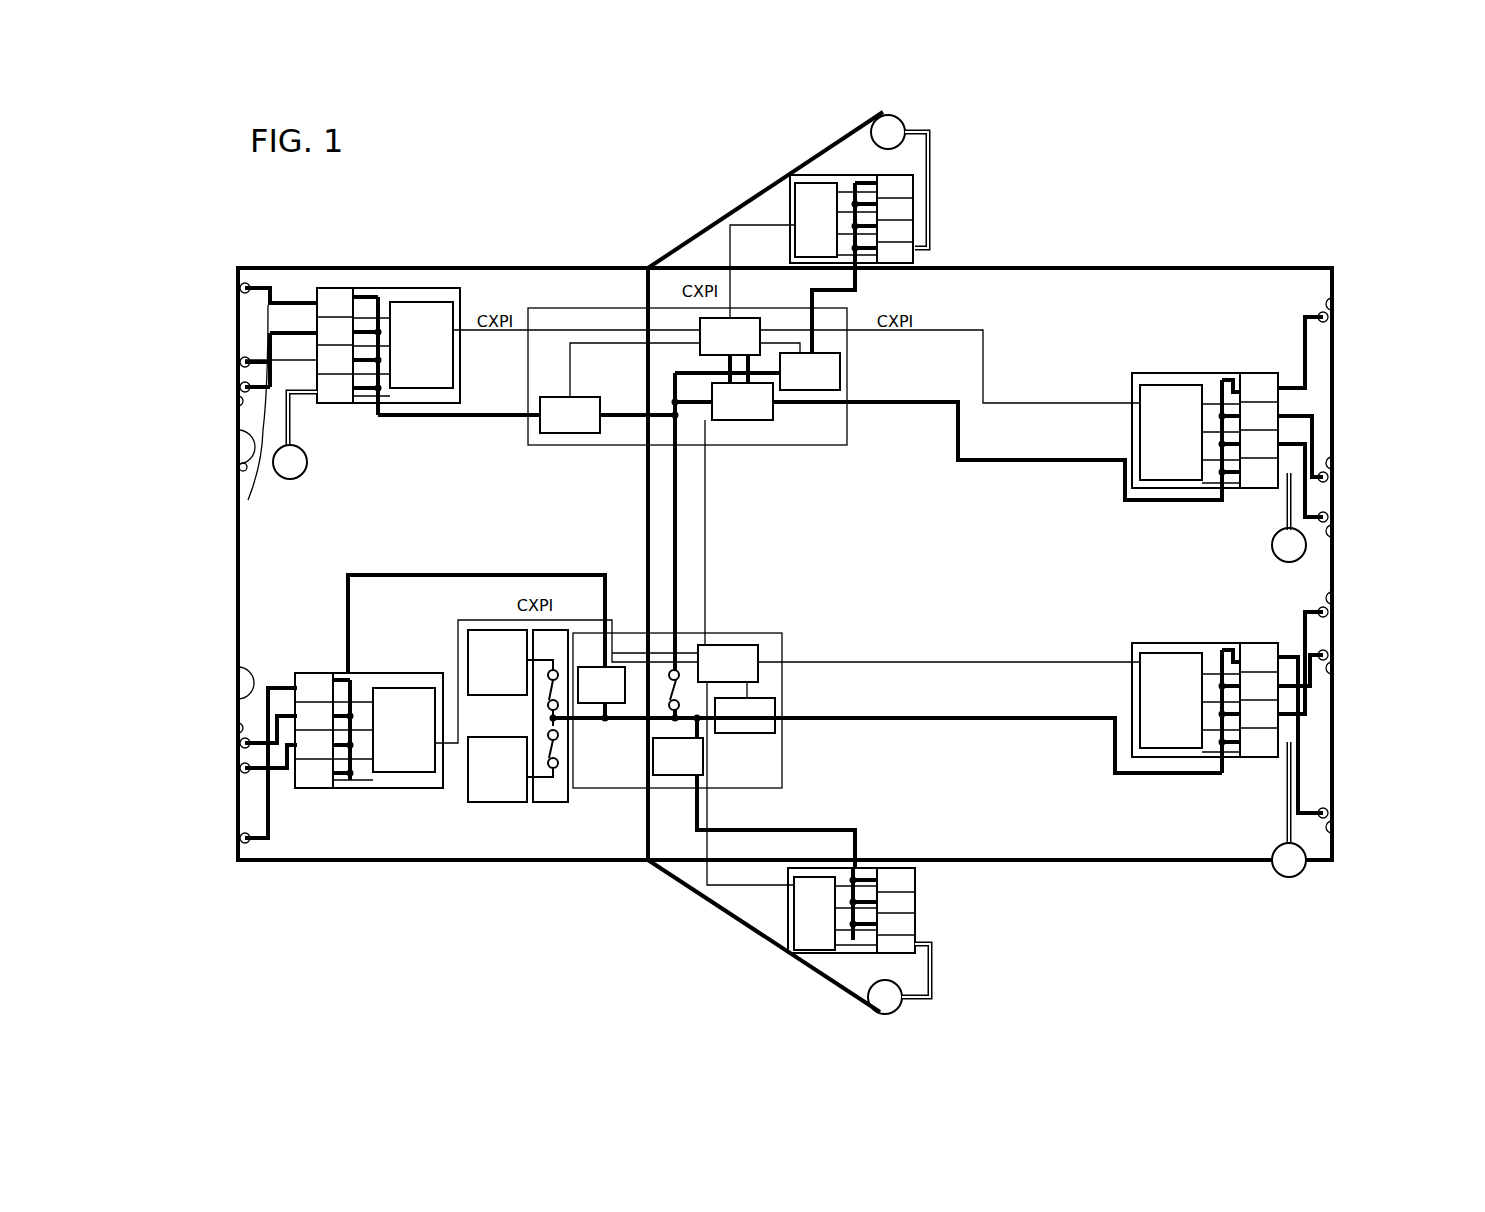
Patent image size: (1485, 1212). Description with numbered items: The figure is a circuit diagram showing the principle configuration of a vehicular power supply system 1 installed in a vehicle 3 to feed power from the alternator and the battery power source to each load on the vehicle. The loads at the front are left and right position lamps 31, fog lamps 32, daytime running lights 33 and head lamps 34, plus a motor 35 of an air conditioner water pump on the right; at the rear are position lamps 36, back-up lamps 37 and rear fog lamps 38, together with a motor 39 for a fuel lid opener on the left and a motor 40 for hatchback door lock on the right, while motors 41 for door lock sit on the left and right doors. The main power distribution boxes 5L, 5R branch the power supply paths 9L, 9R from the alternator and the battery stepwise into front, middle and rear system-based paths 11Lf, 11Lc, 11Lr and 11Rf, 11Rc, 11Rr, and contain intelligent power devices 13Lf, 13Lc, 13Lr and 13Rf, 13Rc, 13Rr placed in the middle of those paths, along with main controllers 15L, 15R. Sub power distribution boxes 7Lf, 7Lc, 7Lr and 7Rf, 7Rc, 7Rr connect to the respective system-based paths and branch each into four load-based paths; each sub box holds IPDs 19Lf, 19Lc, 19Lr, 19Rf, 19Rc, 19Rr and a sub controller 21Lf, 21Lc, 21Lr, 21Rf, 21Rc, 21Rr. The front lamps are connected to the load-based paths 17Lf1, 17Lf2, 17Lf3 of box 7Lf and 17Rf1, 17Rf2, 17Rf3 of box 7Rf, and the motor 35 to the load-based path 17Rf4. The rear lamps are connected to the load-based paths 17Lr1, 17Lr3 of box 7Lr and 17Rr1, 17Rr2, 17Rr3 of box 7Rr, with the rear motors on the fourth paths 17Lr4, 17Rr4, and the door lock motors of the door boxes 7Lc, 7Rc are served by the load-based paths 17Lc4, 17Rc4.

The vehicular power supply system 1 is at (566, 214).
The vehicle 3 is at (1113, 268).
The main power distribution box 5R is at (734, 407).
The main power distribution box 5L is at (689, 652).
The sub power distribution box 7Rf is at (378, 343).
The sub power distribution box 7Rc is at (858, 190).
The sub power distribution box 7Rr is at (1162, 395).
The sub power distribution box 7Lf is at (365, 719).
The sub power distribution box 7Lc is at (821, 910).
The sub power distribution box 7Lr is at (1157, 683).
The power supply path 9R is at (678, 545).
The power supply path 9L is at (625, 722).
The system-based path 11Rf is at (480, 418).
The system-based path 11Rc is at (810, 293).
The system-based path 11Rr is at (1008, 463).
The system-based path 11Lf is at (435, 573).
The system-based path 11Lc is at (820, 828).
The system-based path 11Lr is at (930, 722).
The intelligent power device 13Rf is at (572, 435).
The intelligent power device 13Rc is at (842, 372).
The intelligent power device 13Rr is at (740, 422).
The intelligent power device 13Lf is at (590, 706).
The intelligent power device 13Lc is at (676, 778).
The intelligent power device 13Lr is at (742, 735).
The main controller 15R is at (698, 350).
The main controller 15L is at (735, 643).
The load-based path 17Rf1 is at (262, 285).
The load-based path 17Rf2 is at (248, 503).
The load-based path 17Rf3 is at (262, 350).
The load-based path 17Rf4 is at (302, 430).
The load-based path 17Rc4 is at (931, 220).
The load-based path 17Rr1 is at (1308, 352).
The load-based path 17Rr2 is at (1315, 420).
The load-based path 17Rr3 is at (1318, 548).
The load-based path 17Rr4 is at (1284, 508).
The load-based path 17Lf1 is at (270, 815).
The load-based path 17Lf2 is at (272, 720).
The load-based path 17Lf3 is at (248, 772).
The load-based path 17Lc4 is at (933, 945).
The load-based path 17Lr1 is at (1302, 775).
The load-based path 17Lr3 is at (1302, 630).
The load-based path 17Lr4 is at (1284, 778).
The intelligent power devices 19Rf is at (326, 289).
The intelligent power devices 19Rc is at (896, 176).
The intelligent power devices 19Rr is at (1256, 373).
The intelligent power devices 19Lf is at (310, 673).
The intelligent power devices 19Lc is at (891, 868).
The intelligent power devices 19Lr is at (1255, 643).
The sub controller 21Rf is at (430, 395).
The sub controller 21Rc is at (805, 195).
The sub controller 21Rr is at (1140, 432).
The sub controller 21Lf is at (408, 688).
The sub controller 21Lc is at (818, 955).
The sub controller 21Lr is at (1140, 697).
The position lamp 31 is at (240, 285).
The fog lamp 32 is at (238, 402).
The daytime running light 33 is at (238, 360).
The head lamp 34 is at (238, 466).
The motor 35 is at (290, 480).
The position lamp 36 is at (1330, 304).
The back-up lamp 37 is at (1330, 463).
The rear fog lamp 38 is at (1330, 531).
The motor 39 is at (1275, 848).
The motor 40 is at (1290, 563).
The motor 41 is at (905, 128).